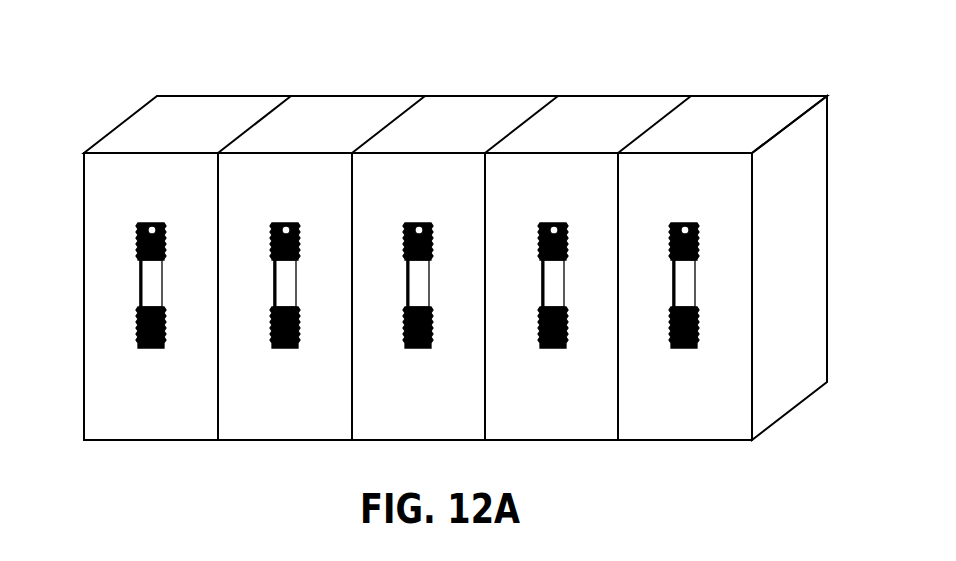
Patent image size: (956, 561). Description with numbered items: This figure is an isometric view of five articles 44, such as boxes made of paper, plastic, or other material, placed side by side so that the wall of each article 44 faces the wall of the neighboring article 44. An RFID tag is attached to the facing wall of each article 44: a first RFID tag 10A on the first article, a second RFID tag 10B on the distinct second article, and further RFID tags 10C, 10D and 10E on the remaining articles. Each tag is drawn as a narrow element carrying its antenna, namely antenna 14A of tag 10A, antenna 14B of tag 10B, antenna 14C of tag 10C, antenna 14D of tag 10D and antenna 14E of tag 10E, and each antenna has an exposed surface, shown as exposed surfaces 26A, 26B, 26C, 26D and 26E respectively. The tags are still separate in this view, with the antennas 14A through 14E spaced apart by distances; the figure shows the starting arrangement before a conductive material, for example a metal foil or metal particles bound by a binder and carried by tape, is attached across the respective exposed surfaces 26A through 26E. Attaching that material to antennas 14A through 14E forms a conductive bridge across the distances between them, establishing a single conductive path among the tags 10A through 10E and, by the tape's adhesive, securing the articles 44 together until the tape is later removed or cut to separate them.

The article 44 is at (203, 93).
The first RFID tag 10A is at (157, 364).
The second RFID tag 10B is at (291, 364).
The RFID tag 10C is at (424, 364).
The RFID tag 10D is at (559, 364).
The RFID tag 10E is at (690, 364).
The antenna 14A is at (138, 257).
The antenna 14B is at (272, 257).
The antenna 14C is at (405, 257).
The antenna 14D is at (540, 257).
The antenna 14E is at (671, 257).
The exposed surface 26A is at (154, 224).
The exposed surface 26B is at (288, 224).
The exposed surface 26C is at (421, 224).
The exposed surface 26D is at (556, 224).
The exposed surface 26E is at (687, 224).